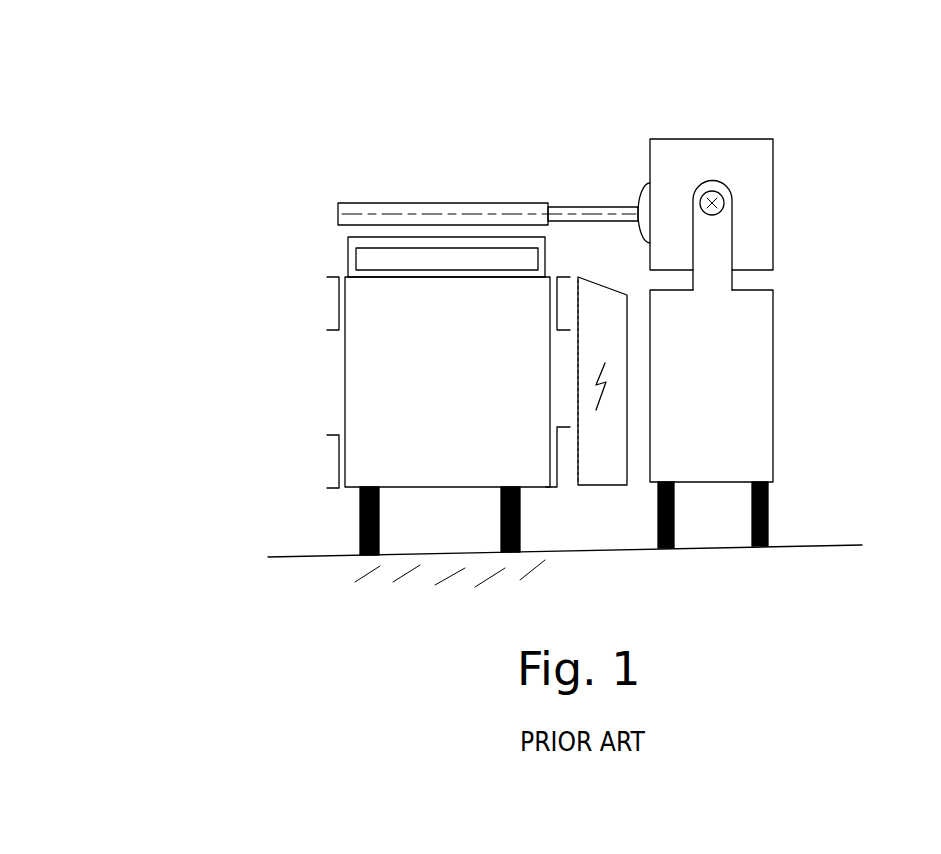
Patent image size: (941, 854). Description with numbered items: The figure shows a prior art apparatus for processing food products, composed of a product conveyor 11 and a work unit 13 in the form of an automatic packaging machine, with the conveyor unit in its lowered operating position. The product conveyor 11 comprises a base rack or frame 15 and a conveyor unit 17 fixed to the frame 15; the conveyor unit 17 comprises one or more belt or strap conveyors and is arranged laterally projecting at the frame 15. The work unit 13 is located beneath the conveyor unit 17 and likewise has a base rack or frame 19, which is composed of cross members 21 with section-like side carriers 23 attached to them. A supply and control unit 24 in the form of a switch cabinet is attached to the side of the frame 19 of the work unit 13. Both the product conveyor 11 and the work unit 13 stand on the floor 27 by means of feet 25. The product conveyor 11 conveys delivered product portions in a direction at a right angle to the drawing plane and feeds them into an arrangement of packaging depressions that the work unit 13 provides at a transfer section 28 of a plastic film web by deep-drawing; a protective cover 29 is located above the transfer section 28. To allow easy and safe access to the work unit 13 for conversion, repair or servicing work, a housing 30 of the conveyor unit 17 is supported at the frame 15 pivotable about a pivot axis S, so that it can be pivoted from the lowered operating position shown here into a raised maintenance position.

The product conveyor 11 is at (861, 178).
The work unit 13 is at (277, 312).
The frame 15 is at (737, 338).
The conveyor unit 17 is at (487, 186).
The frame 19 is at (320, 412).
The cross members 21 is at (373, 365).
The side carriers 23 is at (314, 290).
The supply and control unit 24 is at (613, 463).
The feet 25 is at (360, 517).
The floor 27 is at (817, 526).
The transfer section 28 is at (380, 263).
The protective cover 29 is at (348, 248).
The housing 30 is at (757, 233).
The pivot axis S is at (717, 190).